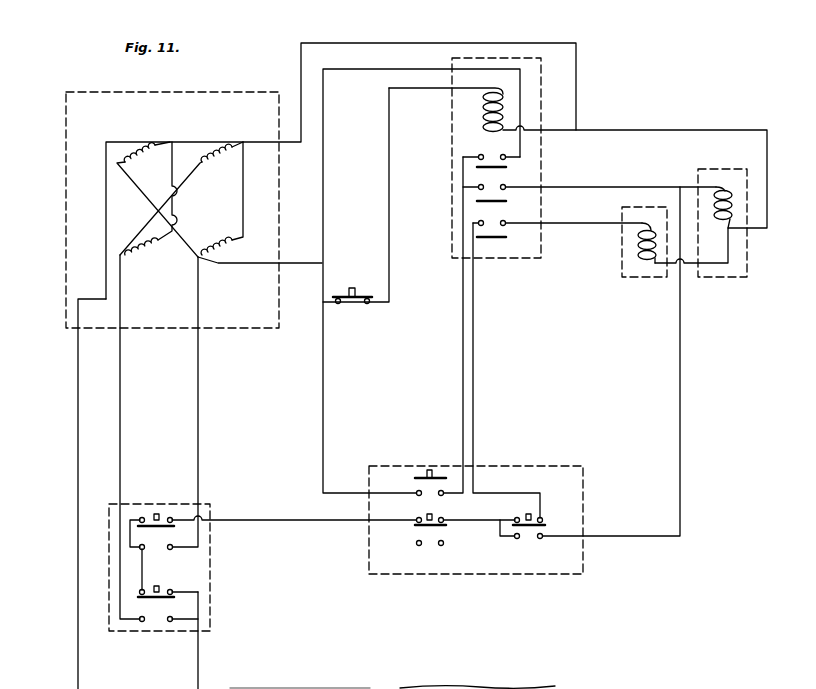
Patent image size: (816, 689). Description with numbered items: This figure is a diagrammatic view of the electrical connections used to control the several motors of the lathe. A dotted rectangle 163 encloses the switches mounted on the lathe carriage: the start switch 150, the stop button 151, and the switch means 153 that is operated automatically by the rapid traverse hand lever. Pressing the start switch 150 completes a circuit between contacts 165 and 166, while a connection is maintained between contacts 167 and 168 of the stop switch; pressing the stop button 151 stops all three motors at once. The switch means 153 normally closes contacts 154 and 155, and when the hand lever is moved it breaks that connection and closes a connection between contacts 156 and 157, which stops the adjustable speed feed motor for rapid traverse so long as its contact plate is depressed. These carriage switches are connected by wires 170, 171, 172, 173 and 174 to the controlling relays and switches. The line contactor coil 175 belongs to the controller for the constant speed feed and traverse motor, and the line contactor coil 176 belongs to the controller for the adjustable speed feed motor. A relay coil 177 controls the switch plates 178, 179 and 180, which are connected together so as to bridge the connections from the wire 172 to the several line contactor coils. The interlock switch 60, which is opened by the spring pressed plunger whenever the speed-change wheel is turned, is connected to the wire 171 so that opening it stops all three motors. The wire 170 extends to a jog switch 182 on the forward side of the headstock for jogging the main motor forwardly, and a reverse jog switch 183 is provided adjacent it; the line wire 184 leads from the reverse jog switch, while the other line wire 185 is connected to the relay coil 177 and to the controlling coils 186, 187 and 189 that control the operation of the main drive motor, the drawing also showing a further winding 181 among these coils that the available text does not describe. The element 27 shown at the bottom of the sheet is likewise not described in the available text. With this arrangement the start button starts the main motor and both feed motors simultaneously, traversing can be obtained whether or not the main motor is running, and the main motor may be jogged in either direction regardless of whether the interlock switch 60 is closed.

The motor 27 is at (438, 687).
The interlock switch 60 is at (352, 287).
The start switch 150 is at (443, 470).
The stop button 151 is at (416, 528).
The switch means 153 is at (535, 528).
The contact 154 is at (520, 517).
The contact 155 is at (545, 520).
The contact 156 is at (515, 538).
The contact 157 is at (541, 540).
The dotted rectangle 163 is at (584, 471).
The contact 165 is at (416, 492).
The contact 166 is at (443, 490).
The contact 167 is at (417, 518).
The contact 168 is at (445, 518).
The wire 170 is at (258, 519).
The wire 171 is at (322, 378).
The wire 172 is at (462, 304).
The wire 173 is at (472, 304).
The wire 174 is at (680, 400).
The line contactor coil 175 is at (718, 186).
The line contactor coil 176 is at (640, 243).
The relay coil 177 is at (483, 103).
The switch plate 178 is at (477, 238).
The switch plate 179 is at (477, 201).
The switch plate 180 is at (477, 166).
The secondary winding 181 is at (146, 256).
The jog switch 182 is at (211, 592).
The reverse jog switch 183 is at (160, 587).
The line wire 184 is at (198, 667).
The line wire 185 is at (78, 463).
The controlling coil 186 is at (138, 143).
The controlling coil 187 is at (215, 145).
The controlling coil 189 is at (218, 264).